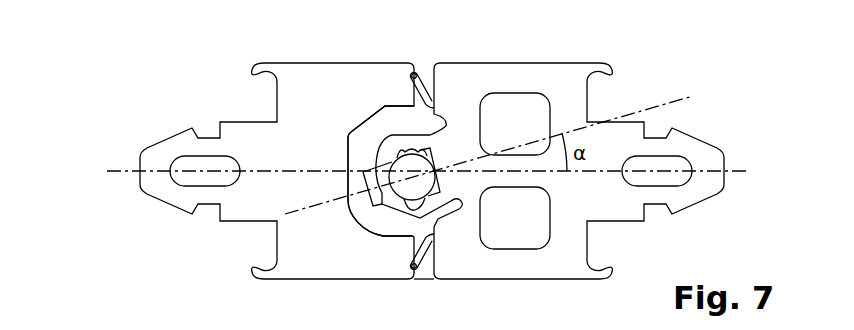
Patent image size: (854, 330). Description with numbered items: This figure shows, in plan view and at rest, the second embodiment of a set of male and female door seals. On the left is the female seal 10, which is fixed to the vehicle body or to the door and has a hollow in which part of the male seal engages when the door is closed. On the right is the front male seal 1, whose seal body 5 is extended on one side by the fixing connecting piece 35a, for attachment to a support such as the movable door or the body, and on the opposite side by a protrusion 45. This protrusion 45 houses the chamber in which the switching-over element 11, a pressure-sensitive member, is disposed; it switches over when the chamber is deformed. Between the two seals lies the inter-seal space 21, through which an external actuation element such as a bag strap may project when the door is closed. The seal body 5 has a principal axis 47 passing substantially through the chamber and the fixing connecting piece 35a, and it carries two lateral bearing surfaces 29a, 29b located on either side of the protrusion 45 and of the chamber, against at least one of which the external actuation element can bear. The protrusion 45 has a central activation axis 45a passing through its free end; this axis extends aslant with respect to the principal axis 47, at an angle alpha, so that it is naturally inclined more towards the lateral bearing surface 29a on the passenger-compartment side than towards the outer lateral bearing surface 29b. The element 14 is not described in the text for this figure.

The male seal 1 is at (565, 286).
The seal body 5 is at (508, 78).
The female seal 10 is at (265, 291).
The switching-over element 11 is at (415, 156).
The pivot plate 14 is at (382, 204).
The inter-seal space 21 is at (447, 292).
The lateral bearing surface 29a is at (440, 236).
The lateral bearing surface 29b is at (438, 84).
The fixing connecting piece 35a is at (707, 182).
The protrusion 45 is at (350, 178).
The central activation axis 45a is at (677, 100).
The principal axis 47 is at (123, 170).